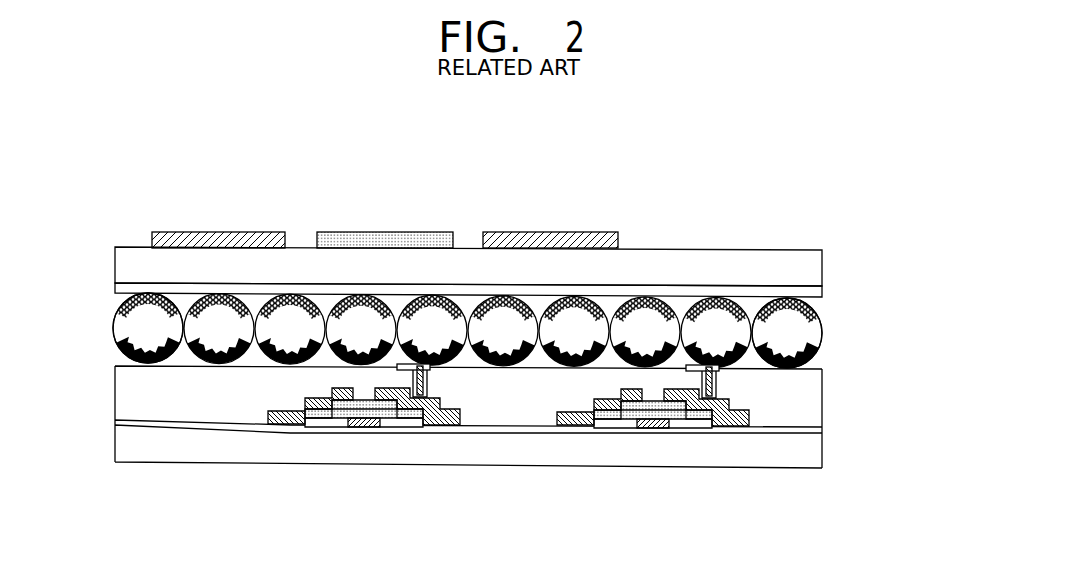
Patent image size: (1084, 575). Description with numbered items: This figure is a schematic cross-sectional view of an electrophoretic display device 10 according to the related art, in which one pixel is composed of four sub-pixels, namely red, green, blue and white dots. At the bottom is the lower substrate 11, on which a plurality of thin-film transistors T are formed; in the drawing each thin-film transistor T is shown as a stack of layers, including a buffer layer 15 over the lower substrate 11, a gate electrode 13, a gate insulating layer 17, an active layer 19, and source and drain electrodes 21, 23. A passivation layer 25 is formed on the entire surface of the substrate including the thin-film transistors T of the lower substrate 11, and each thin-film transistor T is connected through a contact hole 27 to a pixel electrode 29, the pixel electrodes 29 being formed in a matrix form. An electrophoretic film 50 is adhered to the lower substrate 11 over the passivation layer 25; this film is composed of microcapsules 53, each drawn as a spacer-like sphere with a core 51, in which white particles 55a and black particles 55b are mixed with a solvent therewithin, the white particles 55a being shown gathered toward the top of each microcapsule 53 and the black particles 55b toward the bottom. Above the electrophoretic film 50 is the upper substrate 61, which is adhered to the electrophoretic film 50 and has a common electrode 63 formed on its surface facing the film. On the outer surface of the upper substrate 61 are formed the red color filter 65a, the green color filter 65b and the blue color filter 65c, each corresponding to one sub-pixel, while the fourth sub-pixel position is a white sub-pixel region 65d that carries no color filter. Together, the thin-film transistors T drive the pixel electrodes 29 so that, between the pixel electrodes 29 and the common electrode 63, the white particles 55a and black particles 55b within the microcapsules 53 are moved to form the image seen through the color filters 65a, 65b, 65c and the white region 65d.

The liquid crystal display panel 10 is at (830, 230).
The lower substrate 11 is at (822, 452).
The gate electrode 13 is at (364, 428).
The buffer layer 15 is at (822, 427).
The gate insulating layer 17 is at (322, 422).
The active layer 19 is at (402, 419).
The source electrode 21 is at (283, 426).
The drain electrode 23 is at (439, 424).
The passivation layer 25 is at (822, 391).
The contact hole 27 is at (450, 444).
The pixel electrode 29 is at (493, 369).
The electrophoretic film 50 is at (515, 337).
The spacer core 51 is at (816, 341).
The microcapsules 53 is at (822, 326).
The white particles 55a is at (813, 308).
The black particles 55b is at (497, 359).
The upper substrate 61 is at (822, 267).
The common electrode 63 is at (822, 291).
The red color filter 65a is at (225, 232).
The green color filter 65b is at (390, 232).
The blue color filter 65c is at (545, 232).
The white sub-pixel region 65d is at (709, 239).
The thin-film transistor T is at (377, 463).